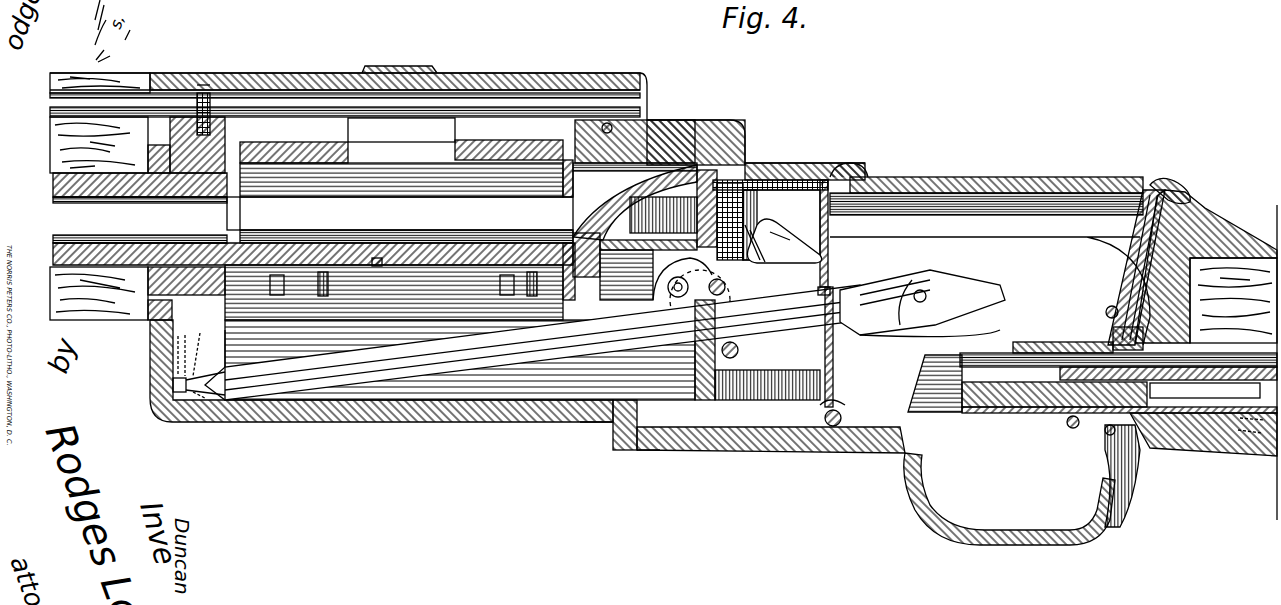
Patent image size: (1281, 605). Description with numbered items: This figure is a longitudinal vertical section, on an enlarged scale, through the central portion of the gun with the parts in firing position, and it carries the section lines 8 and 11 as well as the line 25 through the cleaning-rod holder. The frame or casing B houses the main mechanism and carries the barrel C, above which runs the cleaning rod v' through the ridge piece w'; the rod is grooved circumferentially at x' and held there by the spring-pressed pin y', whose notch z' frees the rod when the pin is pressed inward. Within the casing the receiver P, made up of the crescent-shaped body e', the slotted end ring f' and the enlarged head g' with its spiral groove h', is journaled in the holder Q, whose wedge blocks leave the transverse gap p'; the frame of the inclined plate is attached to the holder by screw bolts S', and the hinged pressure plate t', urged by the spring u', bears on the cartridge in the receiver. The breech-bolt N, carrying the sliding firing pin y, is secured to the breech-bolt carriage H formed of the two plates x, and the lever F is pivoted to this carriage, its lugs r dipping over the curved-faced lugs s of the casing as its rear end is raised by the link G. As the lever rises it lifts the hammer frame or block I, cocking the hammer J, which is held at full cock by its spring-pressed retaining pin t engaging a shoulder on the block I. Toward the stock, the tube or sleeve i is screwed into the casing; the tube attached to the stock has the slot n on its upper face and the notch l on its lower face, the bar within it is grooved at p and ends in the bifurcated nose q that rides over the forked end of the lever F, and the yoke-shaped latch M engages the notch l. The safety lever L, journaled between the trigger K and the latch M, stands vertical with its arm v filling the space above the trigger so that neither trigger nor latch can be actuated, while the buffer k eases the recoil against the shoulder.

The section line 8- 8 is at (365, 462).
The section line 11- 11 is at (783, 472).
The frame or casing B is at (565, 52).
The ridge piece w' is at (575, 257).
The cleaning rod v' is at (345, 103).
The circumferential groove x' is at (221, 93).
The section line 25- 25 is at (200, 92).
The spring-pressed pin y' is at (199, 145).
The barrel C is at (140, 222).
The holder Q is at (406, 165).
The transverse gap or opening p' is at (401, 140).
The slotted end ring f' is at (237, 213).
The elongated body e' is at (406, 213).
The receiver P is at (406, 224).
The enlarged head g' is at (635, 198).
The inclined or spiral groove h' is at (635, 202).
The breech-bolt N is at (655, 218).
The screw bolts S' is at (394, 292).
The sliding firing pin y is at (378, 257).
The spring u' is at (413, 289).
The notch or recess z' is at (392, 294).
The breech-bolt carriage H is at (460, 360).
The plates x is at (523, 304).
The mainspring F' is at (535, 342).
The lever F is at (922, 302).
The laterally-extending lugs r is at (173, 385).
The curved-faced lugs s is at (203, 405).
The hammer frame or block I is at (800, 224).
The hammer J is at (783, 256).
The spring-pressed retaining pin t is at (814, 283).
The elastic cushion or buffer k is at (840, 405).
The link G is at (945, 380).
The latch M is at (1156, 258).
The groove p is at (1204, 338).
The longitudinal slot n is at (1222, 362).
The tube or sleeve i is at (1254, 360).
The bifurcated nose or extension q is at (1050, 360).
The notch or recess l is at (1205, 392).
The safety lever L is at (1150, 440).
The pressure plate t' is at (1251, 428).
The trigger K is at (1100, 505).
The arm v is at (1115, 476).